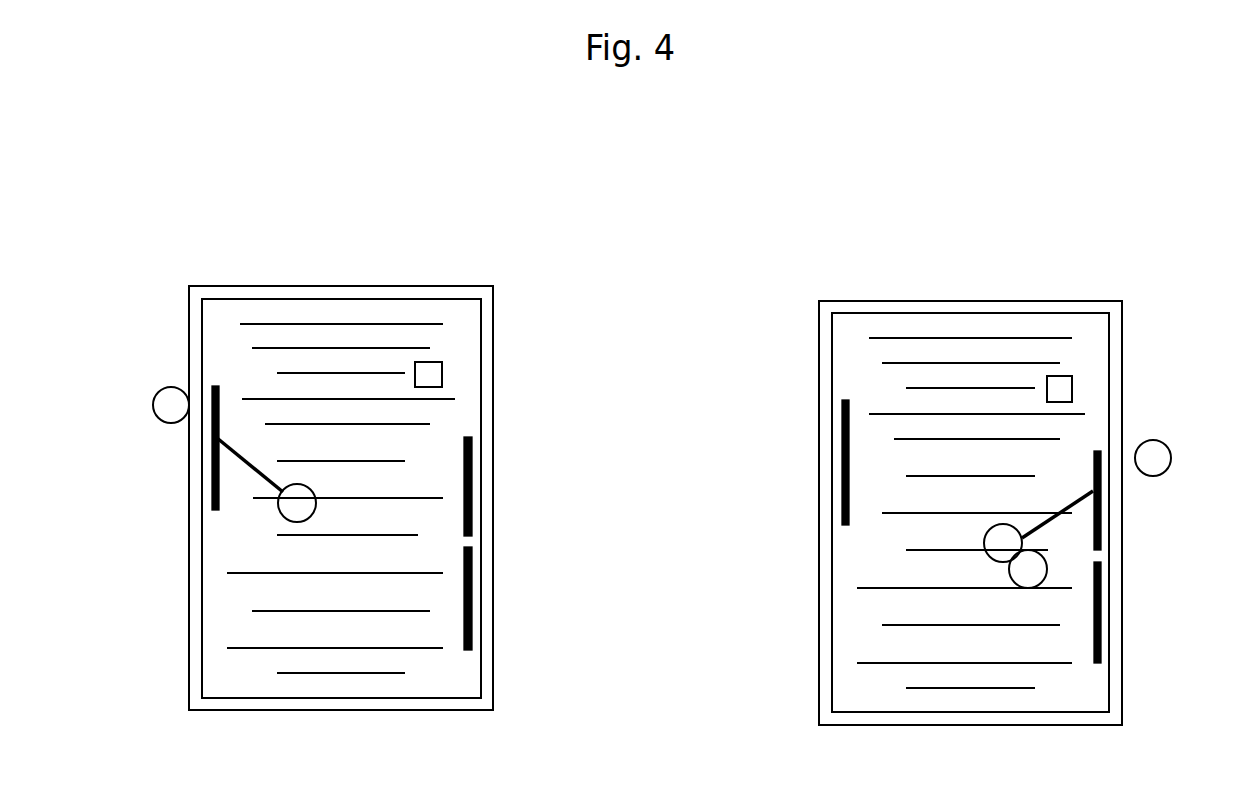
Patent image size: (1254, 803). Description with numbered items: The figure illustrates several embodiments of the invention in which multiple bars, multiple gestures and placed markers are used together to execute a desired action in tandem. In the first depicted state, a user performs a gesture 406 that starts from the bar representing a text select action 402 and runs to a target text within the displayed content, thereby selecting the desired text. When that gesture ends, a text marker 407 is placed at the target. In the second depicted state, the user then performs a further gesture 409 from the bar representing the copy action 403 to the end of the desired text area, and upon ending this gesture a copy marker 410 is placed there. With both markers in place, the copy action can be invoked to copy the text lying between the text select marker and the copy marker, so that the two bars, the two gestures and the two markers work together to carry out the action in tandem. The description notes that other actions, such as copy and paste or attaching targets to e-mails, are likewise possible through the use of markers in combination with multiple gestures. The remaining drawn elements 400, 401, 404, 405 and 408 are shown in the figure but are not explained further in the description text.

The display device 400 is at (493, 374).
The display screen 401 is at (455, 673).
The bar representing a text select action 402 is at (212, 485).
The bar representing the copy action 403 is at (472, 485).
The right lower edge region 404 is at (472, 586).
The touch point outside screen 405 is at (152, 398).
The gesture 406 is at (240, 455).
The text marker 407 is at (303, 484).
The touch point outside screen 408 is at (1171, 463).
The gesture 409 is at (1033, 527).
The copy marker 410 is at (1010, 550).